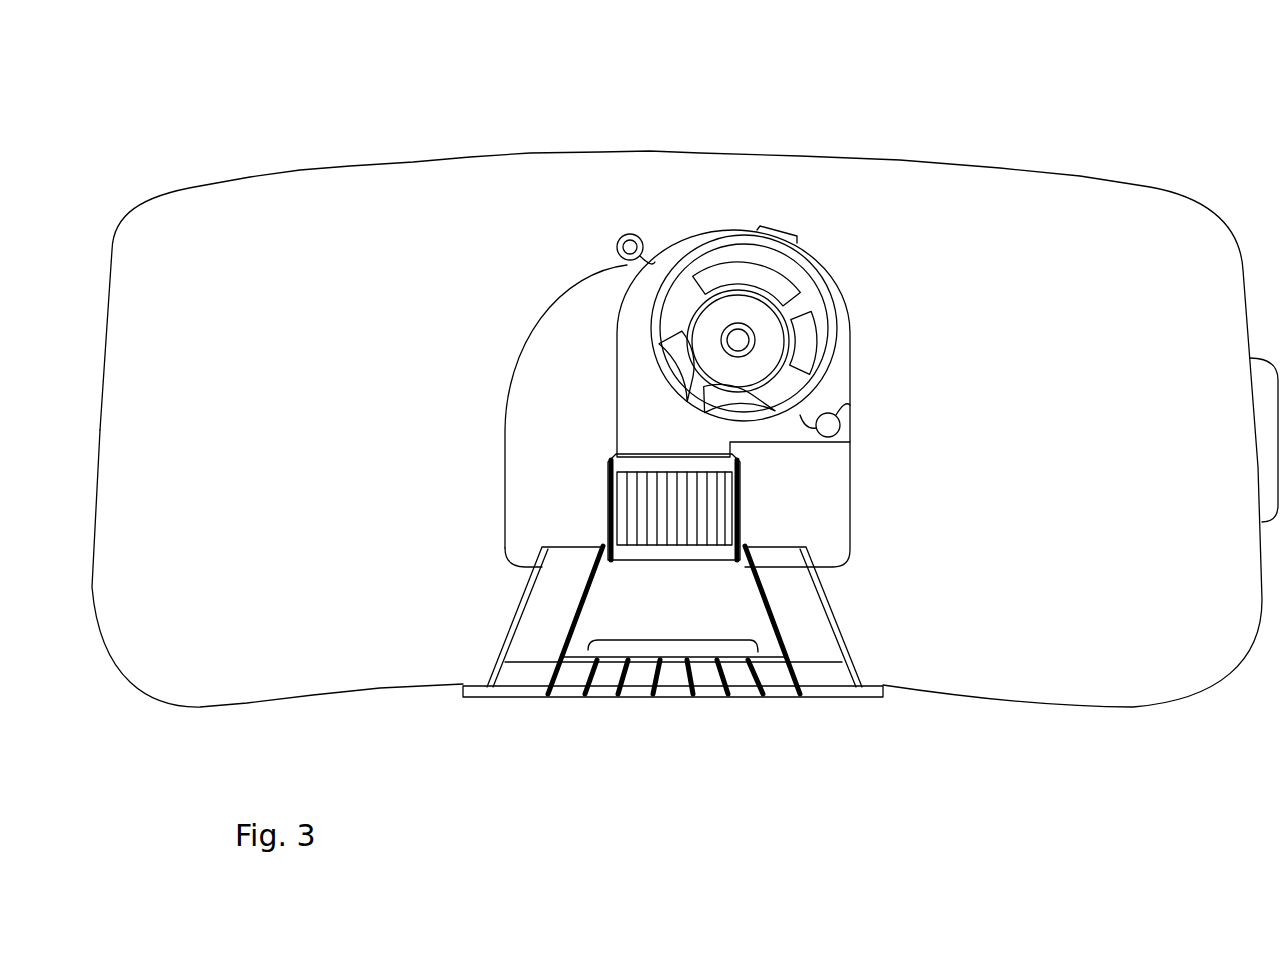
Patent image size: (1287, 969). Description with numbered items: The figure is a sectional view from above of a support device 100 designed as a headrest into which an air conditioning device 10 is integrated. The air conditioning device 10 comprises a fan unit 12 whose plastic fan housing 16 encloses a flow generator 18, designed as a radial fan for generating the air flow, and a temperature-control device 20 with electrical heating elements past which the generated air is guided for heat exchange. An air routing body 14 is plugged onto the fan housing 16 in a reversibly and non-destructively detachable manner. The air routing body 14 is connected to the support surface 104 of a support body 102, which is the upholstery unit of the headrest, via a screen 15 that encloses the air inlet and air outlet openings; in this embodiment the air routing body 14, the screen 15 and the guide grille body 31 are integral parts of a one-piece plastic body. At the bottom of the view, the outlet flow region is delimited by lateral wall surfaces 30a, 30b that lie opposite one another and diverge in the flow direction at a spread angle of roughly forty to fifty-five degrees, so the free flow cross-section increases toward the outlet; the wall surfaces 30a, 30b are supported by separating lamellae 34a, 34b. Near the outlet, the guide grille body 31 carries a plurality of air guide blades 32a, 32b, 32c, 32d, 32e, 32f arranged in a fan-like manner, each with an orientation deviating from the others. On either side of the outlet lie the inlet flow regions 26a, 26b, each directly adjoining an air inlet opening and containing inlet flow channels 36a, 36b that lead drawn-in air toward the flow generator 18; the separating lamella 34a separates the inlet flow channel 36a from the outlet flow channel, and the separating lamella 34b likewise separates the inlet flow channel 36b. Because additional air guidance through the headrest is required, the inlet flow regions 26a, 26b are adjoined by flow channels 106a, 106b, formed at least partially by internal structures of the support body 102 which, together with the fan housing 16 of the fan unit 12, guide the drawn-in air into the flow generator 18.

The support device 100 is at (685, 412).
The support body 102 is at (1162, 187).
The support surface 104 is at (953, 688).
The air conditioning device 10 is at (650, 330).
The fan unit 12 is at (735, 230).
The air routing body 14 is at (669, 646).
The screen 15 is at (480, 697).
The fan housing 16 is at (696, 252).
The flow generator 18 is at (745, 335).
The temperature-control device 20 is at (632, 503).
The inlet flow region 26a is at (518, 641).
The inlet flow region 26b is at (781, 641).
The lateral wall surface 30a is at (585, 610).
The lateral wall surface 30b is at (760, 617).
The guide grille body 31 is at (670, 640).
The air guide blade 32a is at (767, 687).
The air guide blade 32b is at (740, 688).
The air guide blade 32c is at (700, 685).
The air guide blade 32d is at (655, 683).
The air guide blade 32e is at (627, 688).
The air guide blade 32f is at (593, 697).
The separating lamella 34a is at (592, 570).
The separating lamella 34b is at (760, 580).
The inlet flow channel 36a is at (547, 597).
The inlet flow channel 36b is at (807, 600).
The flow channel 106a is at (533, 432).
The flow channel 106b is at (768, 494).